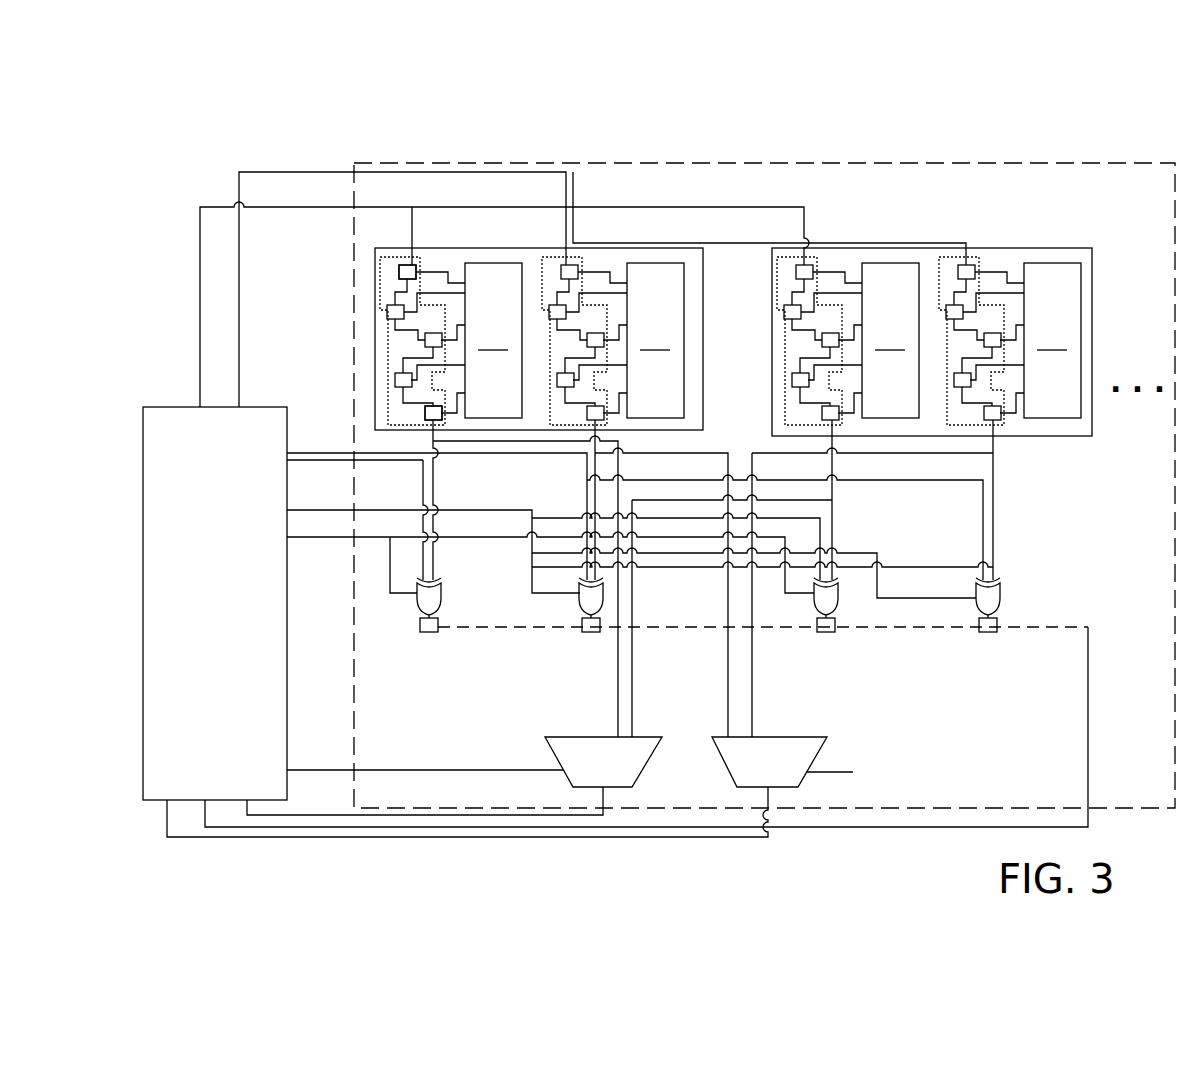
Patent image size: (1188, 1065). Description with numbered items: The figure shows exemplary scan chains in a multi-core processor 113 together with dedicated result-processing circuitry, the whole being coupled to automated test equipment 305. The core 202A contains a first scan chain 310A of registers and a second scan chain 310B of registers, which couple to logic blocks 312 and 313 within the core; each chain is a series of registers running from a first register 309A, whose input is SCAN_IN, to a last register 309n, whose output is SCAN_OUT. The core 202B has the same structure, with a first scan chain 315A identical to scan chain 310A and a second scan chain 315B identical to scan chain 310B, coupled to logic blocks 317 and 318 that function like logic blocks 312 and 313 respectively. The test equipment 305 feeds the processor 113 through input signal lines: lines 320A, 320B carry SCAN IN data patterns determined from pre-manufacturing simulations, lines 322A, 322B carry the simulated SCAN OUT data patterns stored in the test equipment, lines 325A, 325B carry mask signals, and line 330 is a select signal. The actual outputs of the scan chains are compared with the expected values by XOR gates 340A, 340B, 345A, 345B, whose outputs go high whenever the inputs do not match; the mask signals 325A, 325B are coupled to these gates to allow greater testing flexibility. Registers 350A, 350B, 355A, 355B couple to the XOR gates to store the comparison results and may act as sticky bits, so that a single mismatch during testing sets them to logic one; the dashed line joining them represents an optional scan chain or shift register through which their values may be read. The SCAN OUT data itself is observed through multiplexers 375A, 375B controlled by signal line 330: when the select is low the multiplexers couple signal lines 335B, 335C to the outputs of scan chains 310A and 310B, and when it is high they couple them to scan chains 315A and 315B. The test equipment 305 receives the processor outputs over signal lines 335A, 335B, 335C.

The multi-core processor 113 is at (468, 163).
The core 202A is at (637, 248).
The core 202B is at (1010, 248).
The automated test equipment 305 is at (200, 668).
The first register 309A is at (410, 263).
The last register 309n is at (428, 407).
The first scan chain 310A is at (392, 258).
The second scan chain 310B is at (580, 257).
The logic block 312 is at (493, 340).
The logic block 313 is at (655, 340).
The first scan chain 315A is at (812, 258).
The second scan chain 315B is at (972, 258).
The logic block 317 is at (890, 340).
The logic block 318 is at (1052, 340).
The signal line 320A is at (200, 290).
The signal line 320B is at (239, 352).
The signal line 322A is at (292, 452).
The signal line 322B is at (291, 461).
The mask signal 325A is at (292, 509).
The mask signal 325B is at (292, 538).
The signal line 330 is at (418, 770).
The signal line 335A is at (255, 828).
The signal line 335B is at (272, 817).
The signal line 335C is at (247, 842).
The XOR gate 340A is at (441, 598).
The XOR gate 340B is at (604, 596).
The XOR gate 345A is at (838, 596).
The XOR gate 345B is at (998, 588).
The register 350A is at (421, 633).
The register 350B is at (601, 630).
The register 355A is at (818, 632).
The register 355B is at (1000, 630).
The multiplexer 375A is at (632, 611).
The multiplexer 375B is at (794, 617).